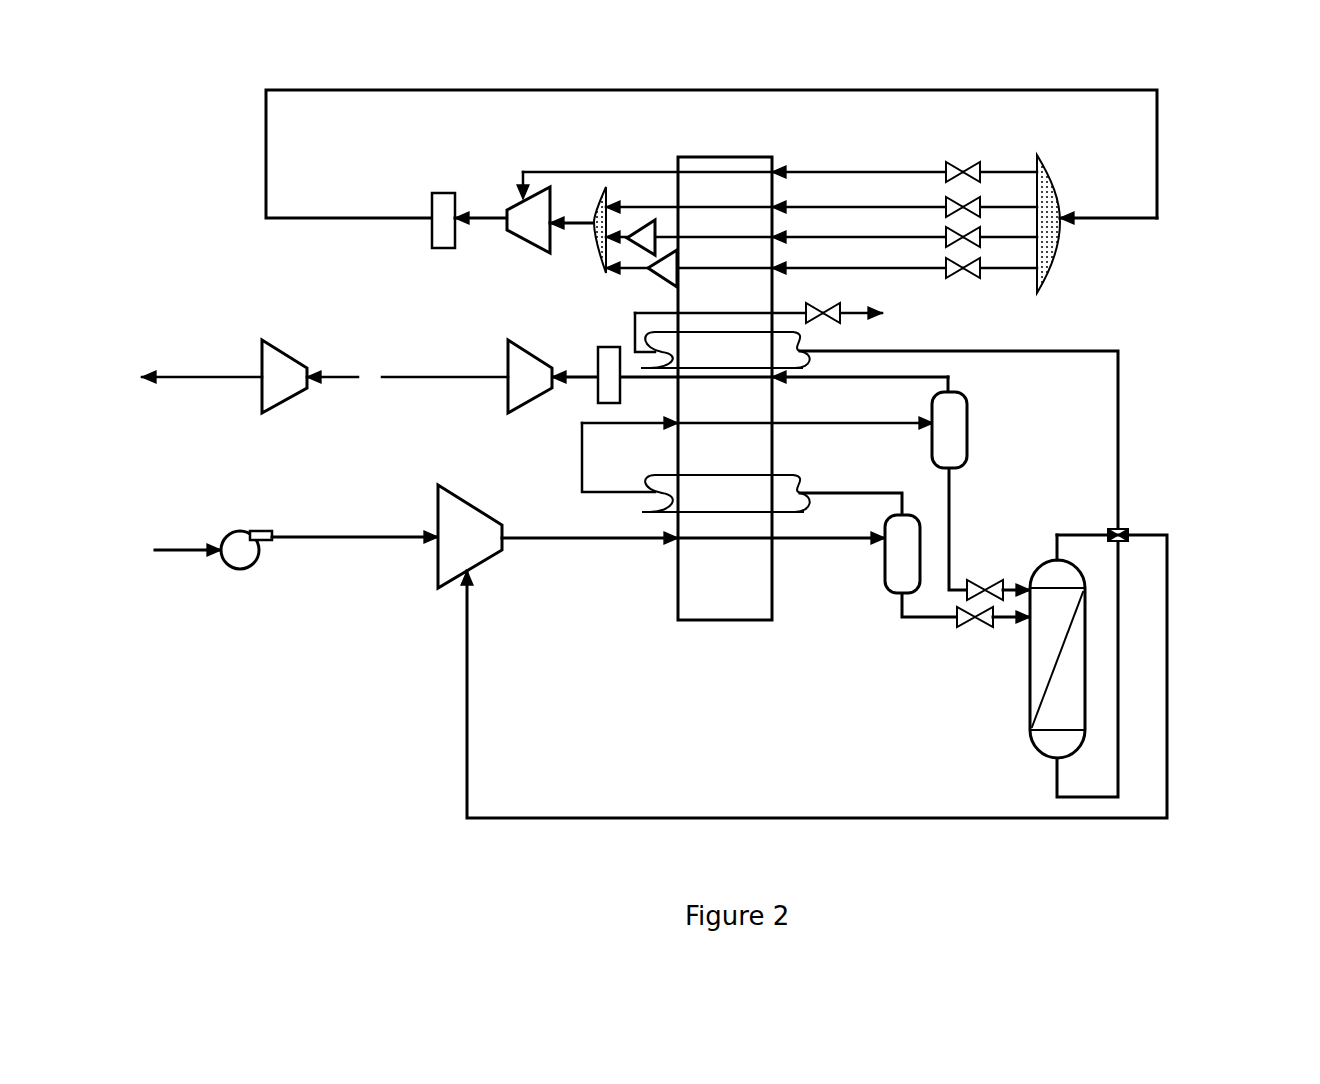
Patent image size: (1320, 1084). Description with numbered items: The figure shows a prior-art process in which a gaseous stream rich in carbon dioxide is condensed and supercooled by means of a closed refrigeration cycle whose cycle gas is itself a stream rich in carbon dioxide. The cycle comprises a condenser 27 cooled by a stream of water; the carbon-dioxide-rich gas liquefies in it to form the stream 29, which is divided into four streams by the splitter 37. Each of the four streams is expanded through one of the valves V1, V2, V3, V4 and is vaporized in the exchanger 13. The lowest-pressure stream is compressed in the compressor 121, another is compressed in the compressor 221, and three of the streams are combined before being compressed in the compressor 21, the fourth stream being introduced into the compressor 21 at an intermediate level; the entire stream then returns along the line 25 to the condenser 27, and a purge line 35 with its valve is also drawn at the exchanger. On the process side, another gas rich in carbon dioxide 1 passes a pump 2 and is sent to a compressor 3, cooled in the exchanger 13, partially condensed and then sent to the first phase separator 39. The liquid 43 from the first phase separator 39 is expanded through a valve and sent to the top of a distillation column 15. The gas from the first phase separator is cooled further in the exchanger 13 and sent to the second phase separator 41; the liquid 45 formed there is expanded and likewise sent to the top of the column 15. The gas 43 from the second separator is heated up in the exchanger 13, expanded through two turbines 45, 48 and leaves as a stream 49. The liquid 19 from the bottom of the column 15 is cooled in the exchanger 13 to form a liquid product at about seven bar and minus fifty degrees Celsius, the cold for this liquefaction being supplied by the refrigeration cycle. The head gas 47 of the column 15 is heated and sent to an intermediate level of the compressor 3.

The gas rich in carbon dioxide 1 is at (175, 548).
The pump 2 is at (240, 550).
The compressor 3 is at (452, 558).
The exchanger 13 is at (747, 598).
The distillation column 15 is at (1028, 693).
The liquid 19 is at (1120, 460).
The compressor 21 is at (535, 230).
The turbine outlet line 25 is at (485, 213).
The condenser 27 is at (432, 230).
The stream 29 is at (287, 222).
The purge line 35 is at (850, 313).
The splitter 37 is at (1052, 243).
The first phase separator 39 is at (883, 573).
The second phase separator 41 is at (970, 433).
The liquid 43 is at (815, 378).
The liquid 45 is at (517, 390).
The head gas 47 is at (1170, 763).
The turbine 48 is at (278, 382).
The stream 49 is at (173, 377).
The compressor 121 is at (637, 272).
The compressor 221 is at (645, 237).
The valve V1 is at (950, 178).
The valve V2 is at (947, 207).
The valve V3 is at (948, 236).
The valve V4 is at (948, 268).